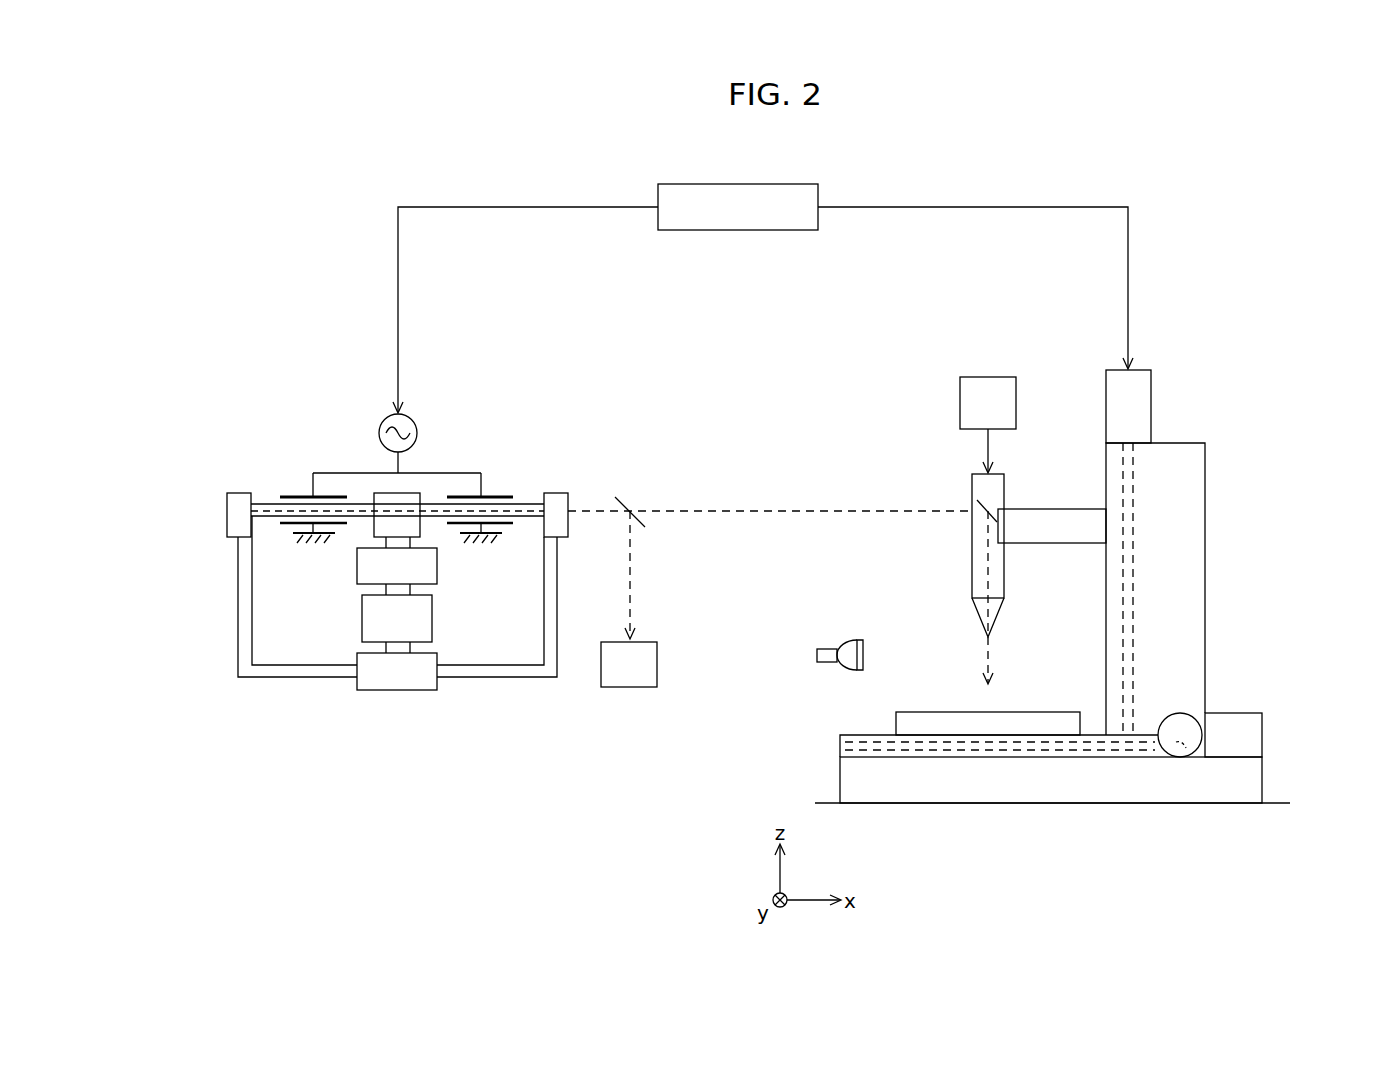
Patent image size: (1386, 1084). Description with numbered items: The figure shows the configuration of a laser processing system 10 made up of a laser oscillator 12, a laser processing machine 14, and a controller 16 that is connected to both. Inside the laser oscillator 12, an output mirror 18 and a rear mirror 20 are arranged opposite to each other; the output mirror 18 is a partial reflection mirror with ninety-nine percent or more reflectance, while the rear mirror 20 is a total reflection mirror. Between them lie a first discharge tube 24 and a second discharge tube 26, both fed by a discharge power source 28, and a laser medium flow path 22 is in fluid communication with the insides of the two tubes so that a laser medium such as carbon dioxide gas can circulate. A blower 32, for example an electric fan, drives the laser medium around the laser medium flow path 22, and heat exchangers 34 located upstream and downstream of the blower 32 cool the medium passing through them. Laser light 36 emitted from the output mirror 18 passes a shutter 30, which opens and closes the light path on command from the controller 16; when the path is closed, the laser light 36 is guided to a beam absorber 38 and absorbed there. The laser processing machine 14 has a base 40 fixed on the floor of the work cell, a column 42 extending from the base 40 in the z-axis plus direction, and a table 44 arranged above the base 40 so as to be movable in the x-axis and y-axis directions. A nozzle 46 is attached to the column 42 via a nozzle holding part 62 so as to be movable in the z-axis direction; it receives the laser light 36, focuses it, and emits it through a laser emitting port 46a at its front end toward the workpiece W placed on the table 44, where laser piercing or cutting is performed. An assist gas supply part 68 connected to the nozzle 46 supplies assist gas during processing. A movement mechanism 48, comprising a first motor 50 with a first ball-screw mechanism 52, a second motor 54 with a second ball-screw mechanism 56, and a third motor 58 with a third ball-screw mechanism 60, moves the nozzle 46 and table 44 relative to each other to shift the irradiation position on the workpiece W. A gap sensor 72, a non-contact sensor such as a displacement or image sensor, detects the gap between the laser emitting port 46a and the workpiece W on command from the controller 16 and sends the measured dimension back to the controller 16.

The laser processing system 10 is at (1318, 125).
The laser oscillator 12 is at (545, 365).
The laser processing machine 14 is at (1228, 325).
The controller 16 is at (677, 184).
The output mirror 18 is at (557, 492).
The rear mirror 20 is at (242, 492).
The laser medium flow path 22 is at (238, 617).
The first discharge tube 24 is at (502, 496).
The second discharge tube 26 is at (295, 495).
The discharge power source 28 is at (415, 420).
The shutter 30 is at (625, 498).
The blower 32 is at (362, 617).
The heat exchangers 34 is at (437, 567).
The laser light 36 is at (765, 511).
The beam absorber 38 is at (615, 687).
The base 40 is at (1262, 783).
The column 42 is at (1205, 552).
The table 44 is at (840, 742).
The nozzle 46 is at (972, 567).
The laser emitting port 46a is at (990, 640).
The movement mechanism 48 is at (1262, 642).
The first motor 50 is at (1262, 737).
The first ball-screw mechanism 52 is at (1012, 752).
The second motor 54 is at (1170, 753).
The second ball-screw mechanism 56 is at (1198, 758).
The third motor 58 is at (1151, 397).
The third ball-screw mechanism 60 is at (1133, 495).
The nozzle holding part 62 is at (1075, 527).
The assist gas supply part 68 is at (1010, 377).
The gap sensor 72 is at (848, 640).
The workpiece W is at (896, 720).